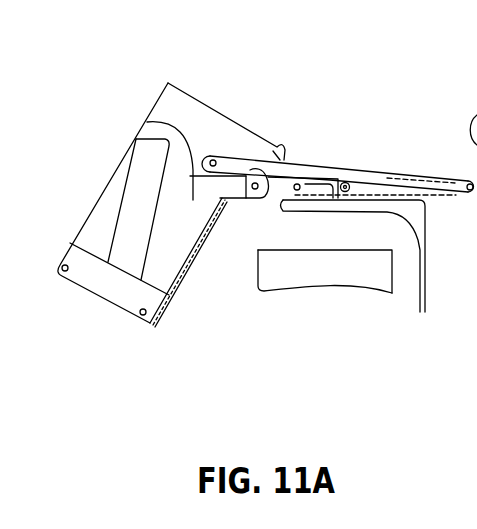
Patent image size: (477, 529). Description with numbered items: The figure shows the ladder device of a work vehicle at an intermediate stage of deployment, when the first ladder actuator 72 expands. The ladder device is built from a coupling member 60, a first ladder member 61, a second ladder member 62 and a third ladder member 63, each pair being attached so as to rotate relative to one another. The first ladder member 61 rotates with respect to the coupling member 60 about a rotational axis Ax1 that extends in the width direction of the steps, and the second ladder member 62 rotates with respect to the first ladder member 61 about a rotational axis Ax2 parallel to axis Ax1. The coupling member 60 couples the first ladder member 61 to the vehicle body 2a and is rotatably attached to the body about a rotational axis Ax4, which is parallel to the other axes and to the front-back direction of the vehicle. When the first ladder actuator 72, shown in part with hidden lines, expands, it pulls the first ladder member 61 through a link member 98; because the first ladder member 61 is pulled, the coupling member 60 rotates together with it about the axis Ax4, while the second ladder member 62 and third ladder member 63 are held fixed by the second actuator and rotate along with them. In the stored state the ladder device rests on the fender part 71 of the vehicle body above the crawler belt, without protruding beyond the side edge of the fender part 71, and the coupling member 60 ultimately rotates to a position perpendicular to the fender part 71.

The seat cushion frame surface 2a is at (287, 273).
The coupling member 60 is at (289, 184).
The first ladder member 61 is at (147, 121).
The second ladder member 62 is at (112, 303).
The third ladder member 63 is at (109, 212).
The fender part 71 is at (358, 206).
The first ladder actuator 72 is at (398, 178).
The link member 98 is at (348, 167).
The rotational axis of the first ladder member Ax1 is at (255, 183).
The rotational axis of the second ladder member Ax2 is at (142, 318).
The rotational axis of the coupling member Ax4 is at (297, 193).